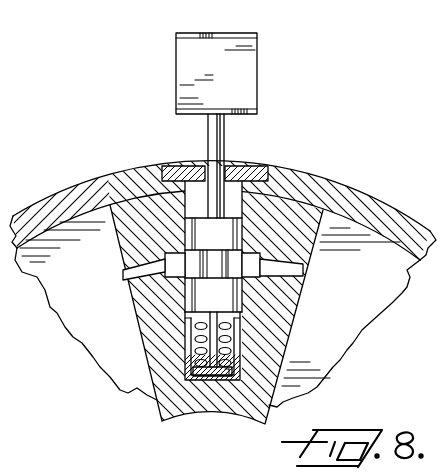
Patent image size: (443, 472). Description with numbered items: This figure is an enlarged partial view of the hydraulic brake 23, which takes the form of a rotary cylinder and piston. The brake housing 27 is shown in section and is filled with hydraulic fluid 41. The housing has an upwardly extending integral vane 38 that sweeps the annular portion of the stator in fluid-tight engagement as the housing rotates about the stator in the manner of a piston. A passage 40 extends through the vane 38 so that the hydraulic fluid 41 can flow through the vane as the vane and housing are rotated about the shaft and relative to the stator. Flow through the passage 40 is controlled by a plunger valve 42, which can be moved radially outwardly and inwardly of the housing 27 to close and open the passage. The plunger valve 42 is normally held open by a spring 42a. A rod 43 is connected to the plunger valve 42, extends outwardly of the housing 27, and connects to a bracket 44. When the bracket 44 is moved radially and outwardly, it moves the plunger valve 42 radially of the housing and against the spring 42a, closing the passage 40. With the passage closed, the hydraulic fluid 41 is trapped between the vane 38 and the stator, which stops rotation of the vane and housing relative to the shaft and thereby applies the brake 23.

The hydraulic brake 23 is at (91, 173).
The brake housing 27 is at (383, 222).
The vane 38 is at (138, 323).
The passage 40 is at (123, 277).
The hydraulic fluid 41 is at (346, 331).
The plunger valve 42 is at (232, 233).
The spring 42a is at (196, 338).
The rod 43 is at (219, 150).
The bracket 44 is at (249, 77).